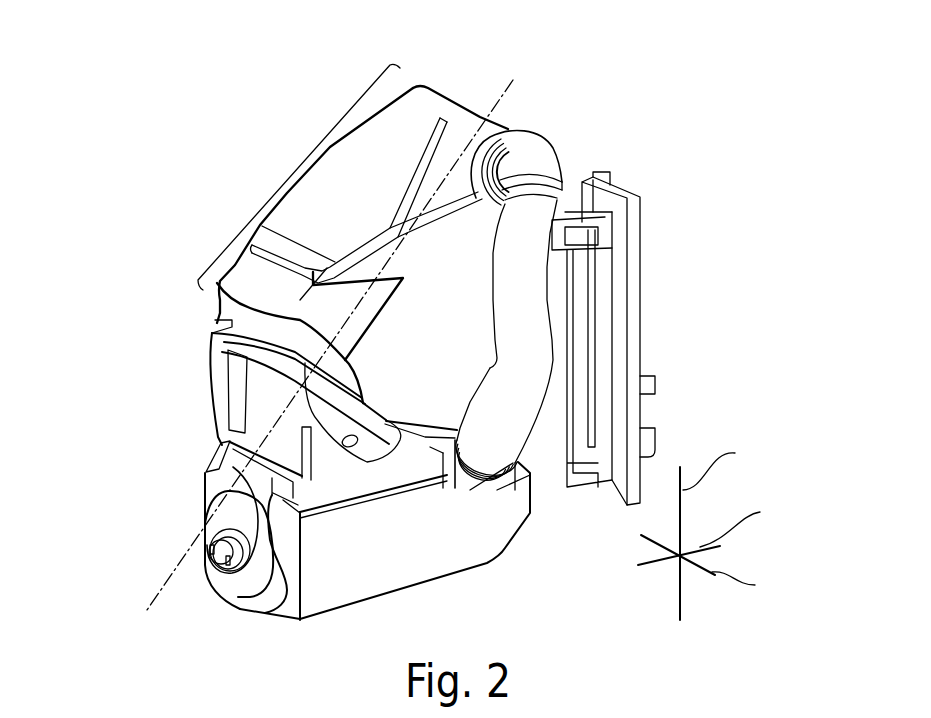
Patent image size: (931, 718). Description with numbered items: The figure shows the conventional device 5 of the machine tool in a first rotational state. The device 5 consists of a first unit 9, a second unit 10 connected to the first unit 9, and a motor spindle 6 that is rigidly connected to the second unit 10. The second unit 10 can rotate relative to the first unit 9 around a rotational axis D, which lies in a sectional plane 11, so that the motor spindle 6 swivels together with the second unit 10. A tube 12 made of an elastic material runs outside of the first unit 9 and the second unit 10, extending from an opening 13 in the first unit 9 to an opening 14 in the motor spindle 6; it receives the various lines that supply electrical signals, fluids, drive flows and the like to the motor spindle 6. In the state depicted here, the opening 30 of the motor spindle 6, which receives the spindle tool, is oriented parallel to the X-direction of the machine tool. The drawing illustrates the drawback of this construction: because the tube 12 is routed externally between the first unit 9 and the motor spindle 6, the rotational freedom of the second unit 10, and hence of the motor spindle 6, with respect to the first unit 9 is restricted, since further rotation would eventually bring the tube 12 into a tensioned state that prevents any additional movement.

The device 5 is at (176, 285).
The motor spindle 6 is at (199, 463).
The first unit 9 is at (305, 157).
The second unit 10 is at (196, 323).
The sectional plane 11 is at (352, 455).
The tube 12 is at (535, 228).
The opening 13 is at (500, 122).
The opening 14 is at (513, 477).
The opening 30 is at (215, 548).